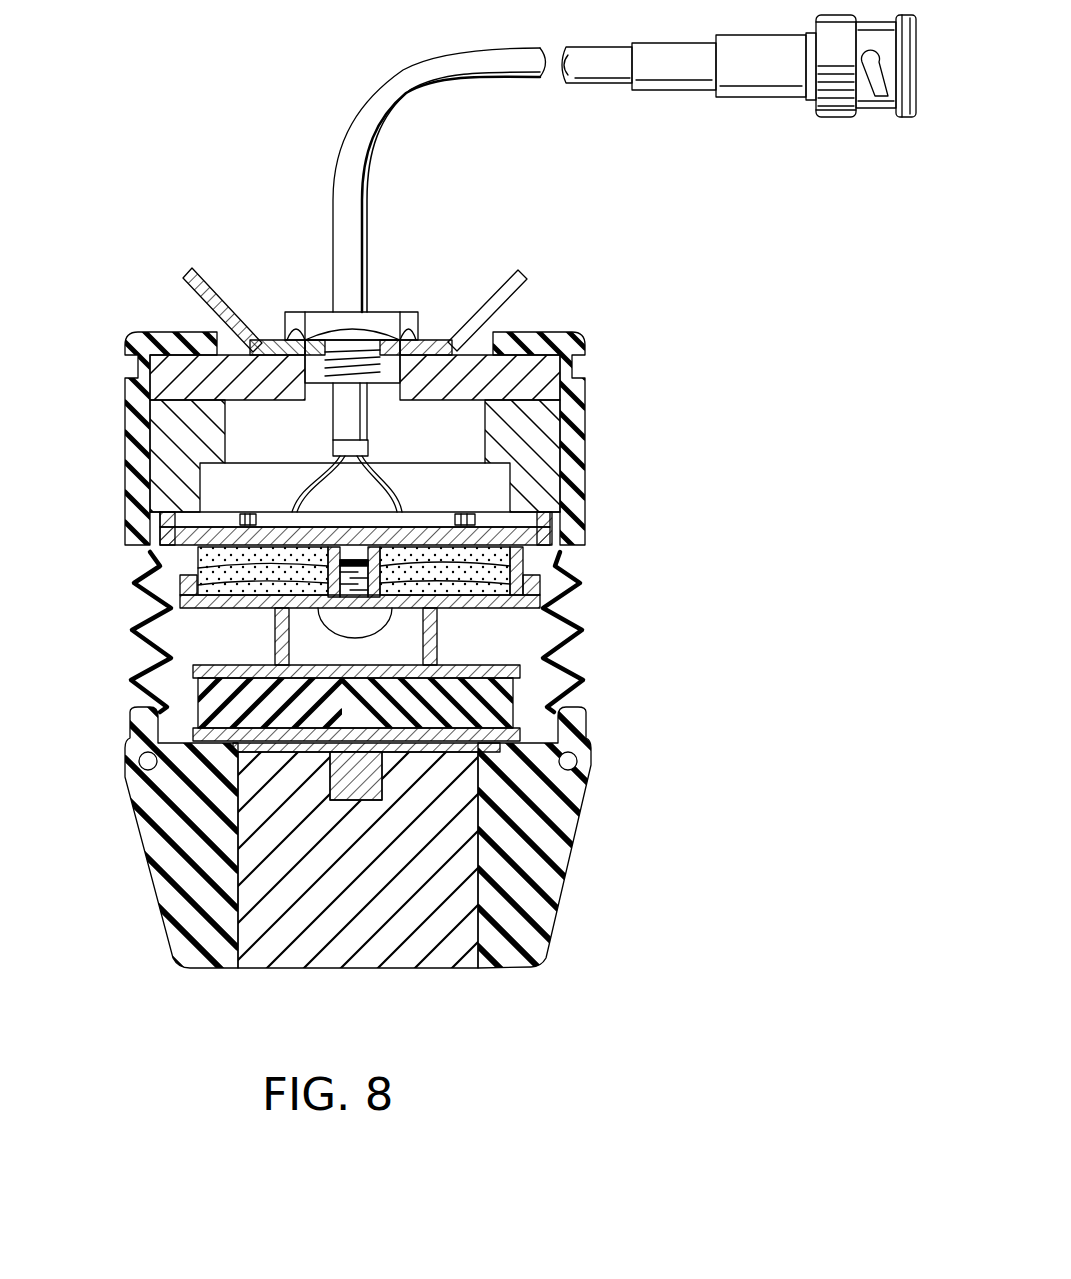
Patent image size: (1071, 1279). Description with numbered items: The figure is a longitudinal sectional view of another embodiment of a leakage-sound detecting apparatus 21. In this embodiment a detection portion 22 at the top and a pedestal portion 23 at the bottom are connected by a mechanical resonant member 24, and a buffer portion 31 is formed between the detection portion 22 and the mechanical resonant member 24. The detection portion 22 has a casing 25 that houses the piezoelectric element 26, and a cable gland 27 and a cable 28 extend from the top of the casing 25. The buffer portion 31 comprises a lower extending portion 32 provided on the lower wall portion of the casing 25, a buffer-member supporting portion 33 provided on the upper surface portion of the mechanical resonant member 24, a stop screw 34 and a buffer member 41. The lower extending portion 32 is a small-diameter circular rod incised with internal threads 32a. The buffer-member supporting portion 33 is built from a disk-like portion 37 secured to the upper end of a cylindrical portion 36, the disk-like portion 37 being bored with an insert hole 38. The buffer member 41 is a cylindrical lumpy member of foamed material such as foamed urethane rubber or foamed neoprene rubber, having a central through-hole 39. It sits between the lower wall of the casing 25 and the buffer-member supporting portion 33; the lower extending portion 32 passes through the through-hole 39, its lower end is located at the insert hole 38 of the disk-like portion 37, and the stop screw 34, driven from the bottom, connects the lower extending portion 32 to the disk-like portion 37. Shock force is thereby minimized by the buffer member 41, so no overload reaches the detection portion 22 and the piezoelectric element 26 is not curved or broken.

The leakage-sound detecting apparatus 21 is at (240, 240).
The detection portion 22 is at (583, 440).
The pedestal portion 23 is at (395, 952).
The mechanical resonant member 24 is at (557, 703).
The casing 25 is at (173, 427).
The piezoelectric element 26 is at (263, 513).
The cable gland 27 is at (300, 370).
The cable 28 is at (367, 130).
The buffer portion 31 is at (608, 593).
The lower extending portion 32 is at (525, 578).
The internal threads 32a is at (360, 562).
The buffer-member supporting portion 33 is at (567, 647).
The stop screw 34 is at (275, 627).
The cylindrical portion 36 is at (318, 612).
The disk-like portion 37 is at (232, 612).
The insert hole 38 is at (555, 572).
The through-hole 39 is at (230, 596).
The buffer member 41 is at (190, 572).